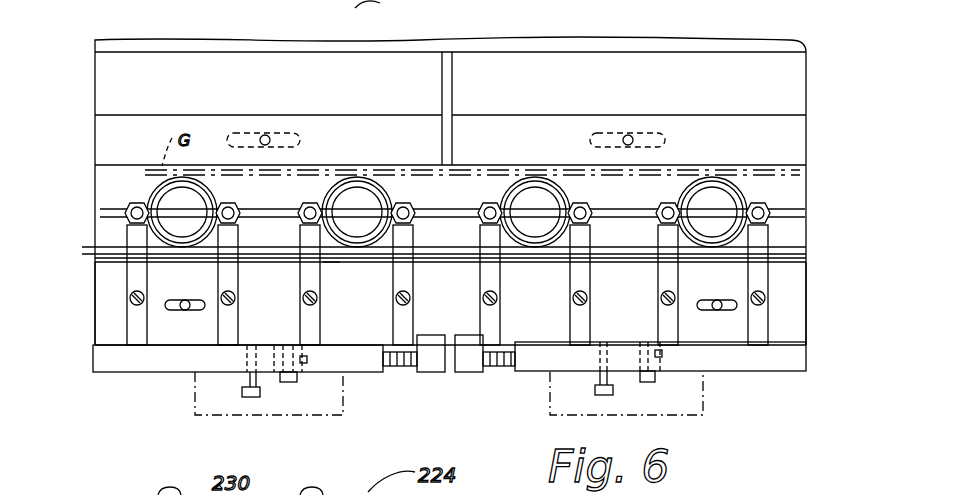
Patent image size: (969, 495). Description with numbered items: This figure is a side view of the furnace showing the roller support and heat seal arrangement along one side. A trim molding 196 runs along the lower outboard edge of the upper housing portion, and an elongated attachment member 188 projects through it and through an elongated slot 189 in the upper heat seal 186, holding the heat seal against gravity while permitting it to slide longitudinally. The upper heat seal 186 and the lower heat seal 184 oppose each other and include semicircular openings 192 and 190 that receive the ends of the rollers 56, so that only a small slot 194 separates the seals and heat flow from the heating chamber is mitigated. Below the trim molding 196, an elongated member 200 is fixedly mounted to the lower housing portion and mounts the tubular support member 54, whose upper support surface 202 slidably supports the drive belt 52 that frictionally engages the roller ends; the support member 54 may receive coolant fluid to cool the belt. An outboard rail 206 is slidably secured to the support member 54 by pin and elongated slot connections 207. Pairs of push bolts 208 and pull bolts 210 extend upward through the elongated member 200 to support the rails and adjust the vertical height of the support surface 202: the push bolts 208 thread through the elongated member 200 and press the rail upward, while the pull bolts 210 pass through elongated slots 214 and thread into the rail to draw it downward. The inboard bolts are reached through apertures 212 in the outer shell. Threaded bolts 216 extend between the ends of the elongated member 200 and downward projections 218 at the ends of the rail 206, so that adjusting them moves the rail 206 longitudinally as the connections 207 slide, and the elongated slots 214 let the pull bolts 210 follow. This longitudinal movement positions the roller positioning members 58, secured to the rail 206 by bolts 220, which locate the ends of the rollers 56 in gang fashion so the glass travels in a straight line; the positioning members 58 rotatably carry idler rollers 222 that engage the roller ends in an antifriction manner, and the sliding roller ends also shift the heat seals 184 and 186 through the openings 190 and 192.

The trim molding 196 is at (157, 78).
The upper heat seal 186 is at (470, 163).
The small slot 194 is at (480, 176).
The elongated slot 189 is at (242, 133).
The elongated attachment member 188 is at (265, 135).
The semicircular opening 192 is at (320, 176).
The roller 56 is at (345, 205).
The idler roller 222 is at (366, 178).
The drive belt 52 is at (92, 250).
The upper support surface 202 is at (254, 247).
The support member 54 is at (112, 262).
The semicircular opening 190 is at (165, 245).
The rail 206 is at (112, 312).
The roller positioning member 58 is at (295, 260).
The lower heat seal 184 is at (340, 263).
The pin and elongated slot connection 207 is at (182, 310).
The bolt 220 is at (484, 292).
The elongated member 200 is at (132, 360).
The threaded bolt 216 is at (503, 356).
The downward projection 218 is at (472, 362).
The elongated slot 214 is at (312, 356).
The push bolt 208 is at (248, 397).
The pull bolt 210 is at (290, 383).
The aperture 212 is at (215, 410).